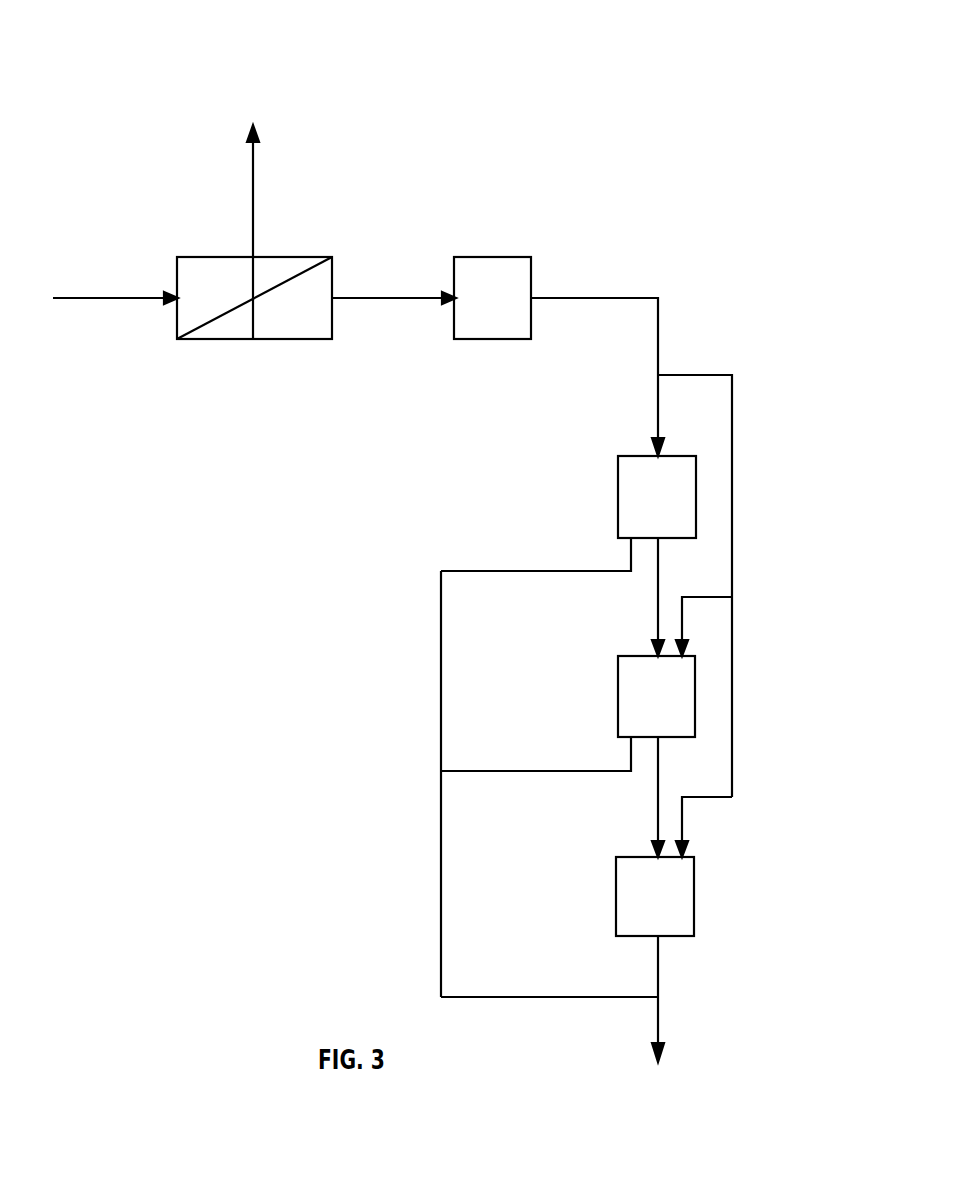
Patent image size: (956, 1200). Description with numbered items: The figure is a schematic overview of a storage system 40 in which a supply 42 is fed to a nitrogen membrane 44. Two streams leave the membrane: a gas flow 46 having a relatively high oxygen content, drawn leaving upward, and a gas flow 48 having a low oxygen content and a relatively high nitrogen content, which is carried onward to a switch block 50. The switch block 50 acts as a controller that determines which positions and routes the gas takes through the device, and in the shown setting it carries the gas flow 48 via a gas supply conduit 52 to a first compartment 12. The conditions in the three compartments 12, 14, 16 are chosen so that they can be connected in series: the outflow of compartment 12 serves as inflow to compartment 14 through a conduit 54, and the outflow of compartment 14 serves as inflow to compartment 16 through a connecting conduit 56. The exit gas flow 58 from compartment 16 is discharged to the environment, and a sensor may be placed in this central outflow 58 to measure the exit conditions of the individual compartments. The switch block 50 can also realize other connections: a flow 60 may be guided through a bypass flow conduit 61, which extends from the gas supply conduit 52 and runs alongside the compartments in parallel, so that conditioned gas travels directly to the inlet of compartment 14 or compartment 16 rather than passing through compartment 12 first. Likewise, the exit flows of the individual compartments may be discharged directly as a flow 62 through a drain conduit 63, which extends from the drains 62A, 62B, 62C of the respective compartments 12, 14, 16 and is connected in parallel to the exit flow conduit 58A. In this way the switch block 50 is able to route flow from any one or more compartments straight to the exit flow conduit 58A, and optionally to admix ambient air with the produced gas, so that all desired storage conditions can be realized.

The system 40 is at (172, 82).
The supply 42 is at (107, 298).
The nitrogen membrane 44 is at (210, 272).
The gas flow 46 is at (253, 170).
The gas flow 48 is at (355, 300).
The switch block 50 is at (490, 272).
The gas supply conduit 52 is at (598, 293).
The flow 60 is at (688, 371).
The bypass flow conduit 61 is at (732, 540).
The compartment 12 is at (633, 500).
The compartment 14 is at (630, 705).
The compartment 16 is at (635, 905).
The conduit 54 is at (655, 602).
The connecting conduit 56 is at (655, 798).
The gas flow 58 is at (653, 952).
The exit flow conduit 58A is at (655, 1026).
The flow 62 is at (438, 705).
The drain 62A is at (628, 556).
The drain 62B is at (631, 757).
The drain 62C is at (655, 963).
The drain conduit 63 is at (438, 757).